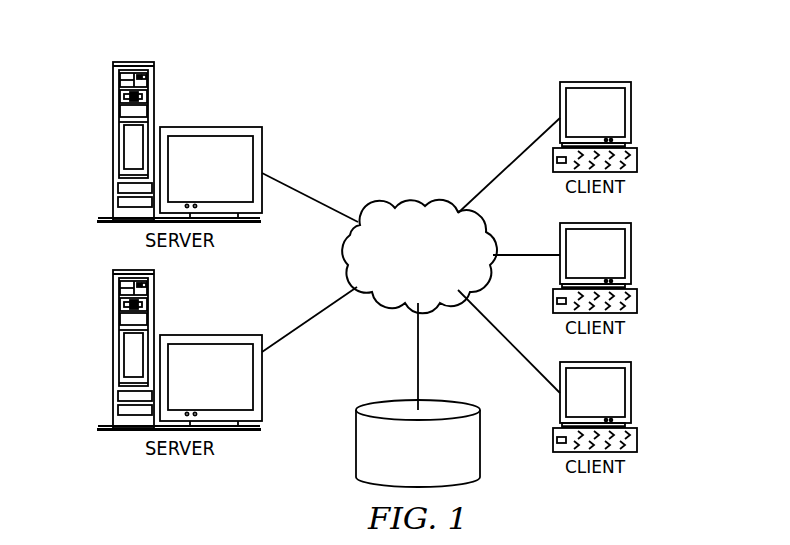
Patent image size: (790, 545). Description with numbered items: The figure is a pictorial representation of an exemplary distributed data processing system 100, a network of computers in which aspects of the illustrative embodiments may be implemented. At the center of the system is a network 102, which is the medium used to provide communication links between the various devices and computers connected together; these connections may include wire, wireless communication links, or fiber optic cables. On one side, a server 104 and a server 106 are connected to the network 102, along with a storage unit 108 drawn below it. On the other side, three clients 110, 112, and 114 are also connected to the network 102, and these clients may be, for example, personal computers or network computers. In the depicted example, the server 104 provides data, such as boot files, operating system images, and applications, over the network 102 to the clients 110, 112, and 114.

The distributed data processing system 100 is at (478, 66).
The network 102 is at (393, 208).
The server 104 is at (115, 143).
The server 106 is at (115, 350).
The storage unit 108 is at (357, 442).
The client 110 is at (631, 113).
The client 112 is at (631, 254).
The client 114 is at (631, 392).